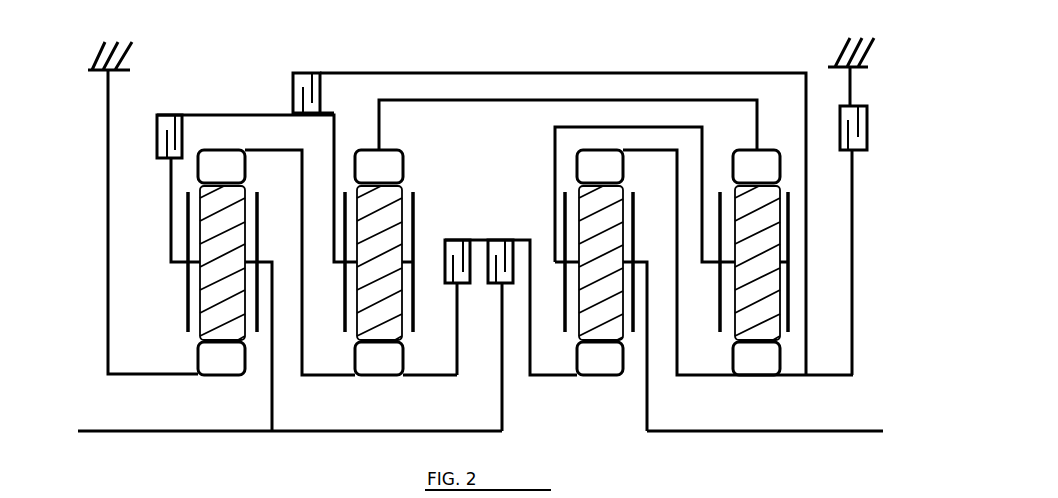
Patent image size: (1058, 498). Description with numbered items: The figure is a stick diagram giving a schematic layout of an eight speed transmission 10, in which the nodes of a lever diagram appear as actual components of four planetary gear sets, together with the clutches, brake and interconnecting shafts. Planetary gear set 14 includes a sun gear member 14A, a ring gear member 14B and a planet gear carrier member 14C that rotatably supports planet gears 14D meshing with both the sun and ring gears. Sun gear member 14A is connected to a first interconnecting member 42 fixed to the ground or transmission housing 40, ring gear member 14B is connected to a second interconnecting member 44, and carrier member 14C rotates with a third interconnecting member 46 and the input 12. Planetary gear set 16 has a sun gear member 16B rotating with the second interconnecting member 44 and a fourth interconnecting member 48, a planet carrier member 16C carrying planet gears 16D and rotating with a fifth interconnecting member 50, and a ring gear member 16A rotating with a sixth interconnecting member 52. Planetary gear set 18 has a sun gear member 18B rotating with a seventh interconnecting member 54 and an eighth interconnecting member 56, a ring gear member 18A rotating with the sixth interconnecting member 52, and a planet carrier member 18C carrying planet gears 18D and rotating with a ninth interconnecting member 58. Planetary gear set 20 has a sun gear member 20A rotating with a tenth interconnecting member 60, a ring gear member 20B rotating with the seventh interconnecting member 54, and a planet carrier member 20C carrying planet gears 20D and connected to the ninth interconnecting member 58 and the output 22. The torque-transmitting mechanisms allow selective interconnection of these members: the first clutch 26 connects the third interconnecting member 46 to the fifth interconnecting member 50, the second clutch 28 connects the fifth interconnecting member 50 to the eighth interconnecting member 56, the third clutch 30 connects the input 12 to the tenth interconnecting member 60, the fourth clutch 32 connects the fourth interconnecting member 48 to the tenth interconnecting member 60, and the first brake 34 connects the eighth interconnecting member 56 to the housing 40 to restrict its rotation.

The eight speed transmission 10 is at (688, 40).
The input 12 is at (118, 433).
The planetary gear set 14 is at (210, 288).
The sun gear member 14A is at (207, 369).
The ring gear member 14B is at (207, 176).
The planet gear carrier member 14C is at (259, 205).
The planet gears 14D is at (199, 337).
The planetary gear set 16 is at (387, 288).
The ring gear member 16A is at (364, 176).
The sun gear member 16B is at (364, 369).
The planet carrier member 16C is at (415, 207).
The planet gears 16D is at (356, 338).
The planetary gear set 18 is at (735, 288).
The ring gear member 18A is at (742, 176).
The sun gear member 18B is at (742, 369).
The planet carrier member 18C is at (718, 280).
The planet gears 18D is at (733, 338).
The planetary gear set 20 is at (585, 289).
The sun gear member 20A is at (585, 369).
The ring gear member 20B is at (585, 176).
The planet carrier member 20C is at (563, 322).
The planet gears 20D is at (625, 340).
The output 22 is at (678, 431).
The first clutch 26 is at (157, 138).
The second clutch 28 is at (292, 92).
The third clutch 30 is at (494, 284).
The fourth clutch 32 is at (445, 257).
The first brake 34 is at (866, 146).
The transmission housing 40 is at (120, 60).
The first interconnecting member 42 is at (108, 212).
The second interconnecting member 44 is at (302, 204).
The third interconnecting member 46 is at (171, 205).
The fourth interconnecting member 48 is at (440, 376).
The fifth interconnecting member 50 is at (244, 115).
The sixth interconnecting member 52 is at (405, 100).
The seventh interconnecting member 54 is at (675, 162).
The eighth interconnecting member 56 is at (565, 73).
The ninth interconnecting member 58 is at (557, 128).
The tenth interconnecting member 60 is at (525, 240).